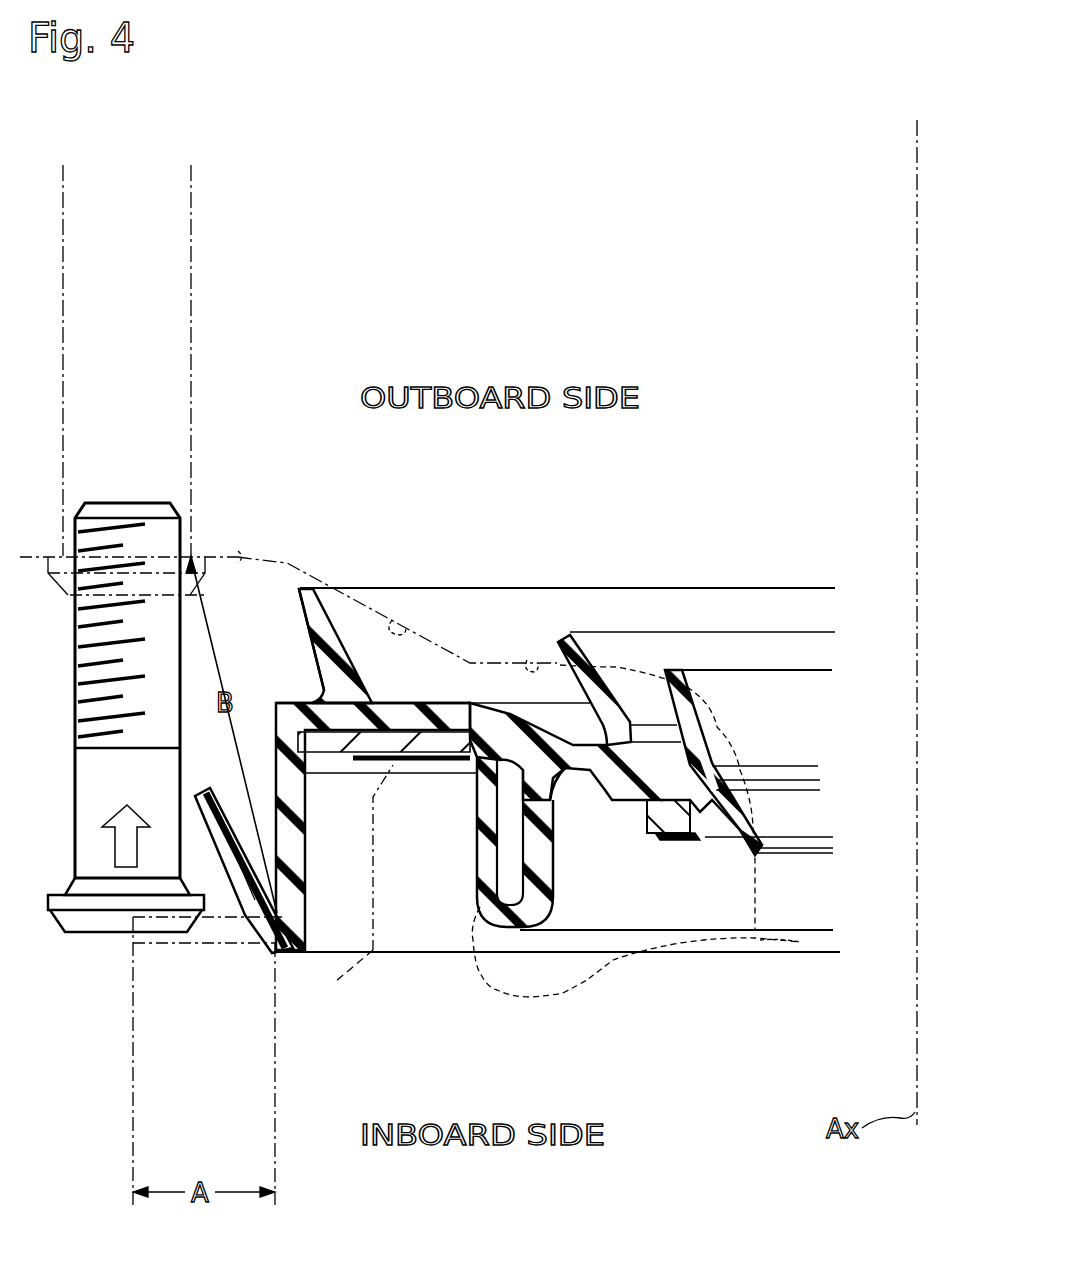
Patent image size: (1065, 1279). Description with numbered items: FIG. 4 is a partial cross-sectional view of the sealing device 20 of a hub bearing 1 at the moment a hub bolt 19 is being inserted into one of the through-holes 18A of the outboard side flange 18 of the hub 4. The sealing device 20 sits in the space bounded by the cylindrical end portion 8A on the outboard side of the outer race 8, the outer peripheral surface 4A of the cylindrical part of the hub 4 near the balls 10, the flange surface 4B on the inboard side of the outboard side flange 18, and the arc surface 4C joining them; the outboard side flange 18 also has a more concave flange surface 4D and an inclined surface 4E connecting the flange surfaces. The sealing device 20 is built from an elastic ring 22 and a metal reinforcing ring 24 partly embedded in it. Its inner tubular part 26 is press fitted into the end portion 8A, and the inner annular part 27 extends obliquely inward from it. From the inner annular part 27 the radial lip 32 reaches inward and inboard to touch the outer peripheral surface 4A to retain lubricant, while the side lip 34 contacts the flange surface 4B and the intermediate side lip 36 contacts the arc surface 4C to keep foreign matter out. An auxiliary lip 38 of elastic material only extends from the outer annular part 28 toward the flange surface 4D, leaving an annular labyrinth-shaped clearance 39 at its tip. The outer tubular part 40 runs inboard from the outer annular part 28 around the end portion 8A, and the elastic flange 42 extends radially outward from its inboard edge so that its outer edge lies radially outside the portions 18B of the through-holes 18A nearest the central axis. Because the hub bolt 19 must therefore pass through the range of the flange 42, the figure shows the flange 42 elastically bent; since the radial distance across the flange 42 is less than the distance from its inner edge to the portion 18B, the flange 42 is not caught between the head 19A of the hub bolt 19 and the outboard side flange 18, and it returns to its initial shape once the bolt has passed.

The hub bearing 1 is at (249, 983).
The hub 4 is at (795, 935).
The outer peripheral surface 4A is at (755, 900).
The flange surface 4B is at (532, 660).
The arc surface 4C is at (735, 738).
The flange surface 4D is at (255, 558).
The inclined surface 4E is at (405, 628).
The outer race 8 is at (372, 884).
The cylindrical end portion 8A is at (393, 822).
The balls 10 is at (793, 953).
The outboard side flange 18 is at (212, 560).
The through-holes 18A is at (63, 470).
The portions closest to the central axis 18B is at (191, 350).
The hub bolts 19 is at (78, 745).
The heads 19A is at (68, 594).
The sealing device 20 is at (560, 580).
The elastic ring 22 is at (333, 762).
The reinforcing ring 24 is at (527, 887).
The inner tubular part 26 is at (532, 905).
The inner annular part 27 is at (612, 808).
The outer annular part 28 is at (420, 702).
The radial lip 32 is at (757, 848).
The side lip 34 is at (580, 648).
The side lip 36 is at (690, 682).
The auxiliary lip 38 is at (305, 650).
The clearance 39 is at (301, 626).
The outer tubular part 40 is at (300, 920).
The flange 42 is at (200, 806).